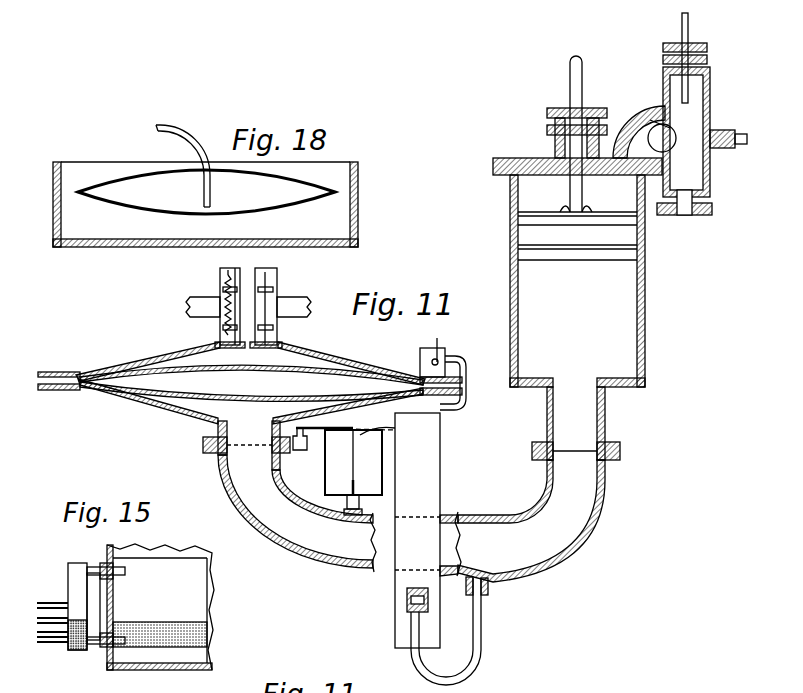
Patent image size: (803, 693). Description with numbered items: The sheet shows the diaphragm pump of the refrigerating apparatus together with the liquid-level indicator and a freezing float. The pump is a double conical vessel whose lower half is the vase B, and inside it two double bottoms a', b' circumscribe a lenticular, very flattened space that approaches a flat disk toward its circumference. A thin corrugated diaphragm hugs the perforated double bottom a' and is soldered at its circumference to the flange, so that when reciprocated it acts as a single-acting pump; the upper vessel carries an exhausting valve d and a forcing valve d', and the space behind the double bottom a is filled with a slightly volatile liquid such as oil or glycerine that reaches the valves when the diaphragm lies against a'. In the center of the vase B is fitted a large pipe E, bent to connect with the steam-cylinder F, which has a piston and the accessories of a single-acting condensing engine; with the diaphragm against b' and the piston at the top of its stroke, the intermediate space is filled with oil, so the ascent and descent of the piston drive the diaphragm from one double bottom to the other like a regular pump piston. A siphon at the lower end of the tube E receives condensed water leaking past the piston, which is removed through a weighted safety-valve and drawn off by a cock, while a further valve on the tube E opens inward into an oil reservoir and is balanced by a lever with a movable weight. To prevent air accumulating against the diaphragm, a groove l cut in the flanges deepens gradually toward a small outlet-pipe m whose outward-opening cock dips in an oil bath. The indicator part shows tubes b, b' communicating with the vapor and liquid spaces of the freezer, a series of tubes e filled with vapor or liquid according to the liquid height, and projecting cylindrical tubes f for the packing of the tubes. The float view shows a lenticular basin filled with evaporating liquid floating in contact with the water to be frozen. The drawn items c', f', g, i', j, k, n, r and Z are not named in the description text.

In FIG. 11, the double bottom a is at (250, 363).
In FIG. 15, the double bottom a is at (160, 607).
In FIG. 11, the double bottom a' is at (251, 371).
In FIG. 15, the tube b is at (159, 598).
In FIG. 11, the double bottom b' is at (251, 397).
In FIG. 15, the double bottom b' is at (104, 654).
In FIG. 11, the double conical vessel B is at (250, 404).
In FIG. 15, the terminal block c' is at (72, 606).
In FIG. 11, the exhausting valve d is at (215, 308).
In FIG. 11, the forcing valve d' is at (280, 308).
In FIG. 15, the tubes e is at (44, 616).
In FIG. 11, the pipe E is at (507, 491).
In FIG. 15, the projecting cylindrical tube f is at (104, 557).
In FIG. 15, the pin f' is at (100, 656).
In FIG. 11, the steam-cylinder F is at (620, 200).
In FIG. 11, the U-pipe g is at (450, 683).
In FIG. 11, the fitting i' is at (396, 615).
In FIG. 11, the valve j is at (372, 482).
In FIG. 11, the lever k is at (320, 434).
In FIG. 11, the groove l is at (60, 374).
In FIG. 11, the outlet-pipe m is at (430, 360).
In FIG. 11, the pipe n is at (370, 530).
In FIG. 11, the pipe r is at (466, 385).
In FIG. 11, the elbow Z is at (289, 496).